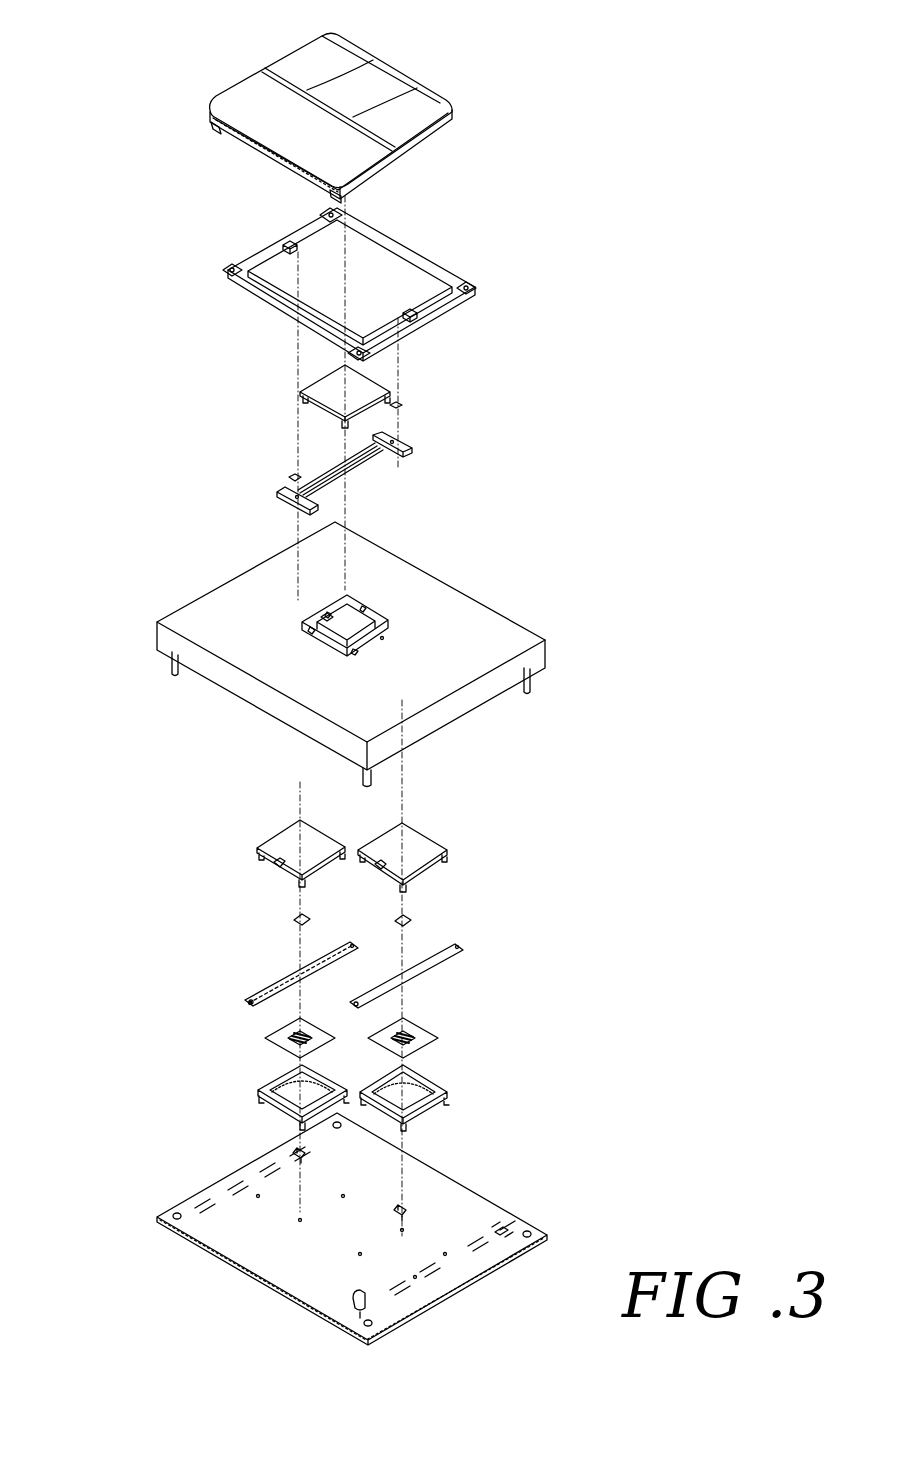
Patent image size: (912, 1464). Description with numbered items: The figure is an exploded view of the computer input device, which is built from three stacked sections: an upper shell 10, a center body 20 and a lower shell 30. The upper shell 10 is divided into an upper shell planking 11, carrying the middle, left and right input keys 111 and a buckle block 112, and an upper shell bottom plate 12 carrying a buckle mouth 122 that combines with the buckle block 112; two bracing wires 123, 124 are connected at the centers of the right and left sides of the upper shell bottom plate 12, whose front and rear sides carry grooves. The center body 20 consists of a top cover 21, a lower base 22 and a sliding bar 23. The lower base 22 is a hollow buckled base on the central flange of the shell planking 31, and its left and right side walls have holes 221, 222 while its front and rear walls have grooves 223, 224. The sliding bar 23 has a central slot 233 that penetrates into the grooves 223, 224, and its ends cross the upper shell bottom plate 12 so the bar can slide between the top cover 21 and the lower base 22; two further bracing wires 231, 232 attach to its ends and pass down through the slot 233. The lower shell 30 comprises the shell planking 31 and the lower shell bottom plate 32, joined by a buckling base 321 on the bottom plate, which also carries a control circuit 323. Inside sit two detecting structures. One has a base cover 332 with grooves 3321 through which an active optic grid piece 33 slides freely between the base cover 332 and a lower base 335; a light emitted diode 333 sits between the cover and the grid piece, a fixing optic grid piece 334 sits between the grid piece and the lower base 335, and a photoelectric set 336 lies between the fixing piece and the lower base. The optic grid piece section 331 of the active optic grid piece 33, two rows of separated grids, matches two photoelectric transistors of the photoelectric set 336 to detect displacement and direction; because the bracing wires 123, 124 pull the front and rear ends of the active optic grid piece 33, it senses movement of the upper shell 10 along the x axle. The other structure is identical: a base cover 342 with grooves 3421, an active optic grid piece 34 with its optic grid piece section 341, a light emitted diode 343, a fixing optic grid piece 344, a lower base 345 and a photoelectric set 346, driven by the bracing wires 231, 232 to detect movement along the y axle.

The upper shell 10 is at (190, 0).
The upper shell planking 11 is at (331, 104).
The input keys 111 is at (338, 52).
The buckle block 112 is at (213, 132).
The upper shell bottom plate 12 is at (372, 285).
The buckle mouth 122 is at (238, 277).
The bracing wire 123 is at (265, 407).
The bracing wire 124 is at (398, 403).
The center body 20 is at (610, 370).
The top cover 21 is at (367, 387).
The lower base 22 is at (351, 649).
The hole 221 is at (317, 603).
The hole 222 is at (360, 653).
The groove 223 is at (367, 605).
The groove 224 is at (318, 637).
The sliding bar 23 is at (272, 733).
The bracing wire 231 is at (327, 500).
The bracing wire 232 is at (380, 472).
The slot 233 is at (327, 475).
The lower shell 30 is at (78, 649).
The shell planking 31 is at (445, 603).
The optic grid piece section 331 is at (533, 683).
The lower shell bottom plate 32 is at (414, 1229).
The buckling base 321 is at (528, 1232).
The control circuit 323 is at (502, 1230).
The active optic grid piece 33 is at (436, 1015).
The base cover 332 is at (420, 843).
The groove 3321 is at (378, 865).
The light emitted diode 333 is at (412, 918).
The fixing optic grid piece 334 is at (417, 1045).
The lower base 335 is at (432, 1102).
The photoelectric set 336 is at (408, 1207).
The active optic grid piece 34 is at (250, 984).
The optic grid piece section 341 is at (262, 992).
The base cover 342 is at (280, 843).
The groove 3421 is at (280, 865).
The light emitted diode 343 is at (293, 918).
The fixing optic grid piece 344 is at (283, 1035).
The lower base 345 is at (275, 1087).
The photoelectric set 346 is at (297, 1150).